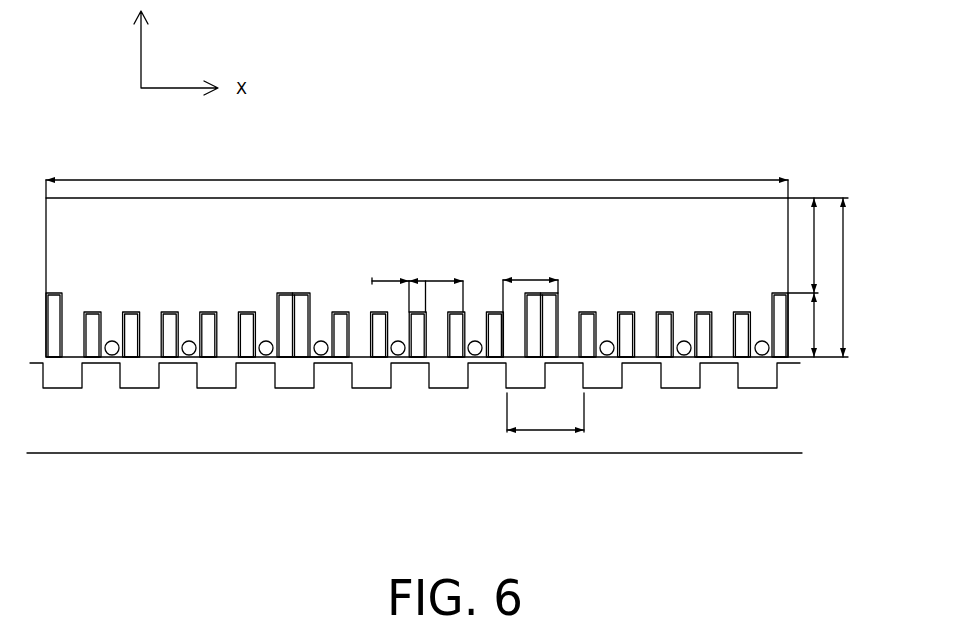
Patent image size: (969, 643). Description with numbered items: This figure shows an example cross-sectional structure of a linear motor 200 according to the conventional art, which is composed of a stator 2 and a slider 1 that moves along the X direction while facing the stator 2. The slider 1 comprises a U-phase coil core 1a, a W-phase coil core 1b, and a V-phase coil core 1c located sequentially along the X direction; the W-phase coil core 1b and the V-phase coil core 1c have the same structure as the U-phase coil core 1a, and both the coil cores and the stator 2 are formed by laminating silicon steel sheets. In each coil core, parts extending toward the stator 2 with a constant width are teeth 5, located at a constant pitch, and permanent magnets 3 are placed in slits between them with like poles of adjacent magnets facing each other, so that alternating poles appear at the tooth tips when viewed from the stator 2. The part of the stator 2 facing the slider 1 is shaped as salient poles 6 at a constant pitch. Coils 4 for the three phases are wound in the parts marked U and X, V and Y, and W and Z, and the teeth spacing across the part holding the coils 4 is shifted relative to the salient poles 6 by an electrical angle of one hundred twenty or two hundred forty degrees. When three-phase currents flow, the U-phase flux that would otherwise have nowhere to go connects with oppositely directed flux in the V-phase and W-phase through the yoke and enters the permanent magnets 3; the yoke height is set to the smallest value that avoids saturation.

The slider 1 is at (763, 196).
The U-phase coil core 1a is at (150, 213).
The W-phase coil core 1b is at (468, 213).
The V-phase coil core 1c is at (665, 213).
The stator 2 is at (363, 418).
The permanent magnet 3 is at (301, 300).
The coil 4 is at (53, 310).
The teeth 5 is at (357, 327).
The salient pole 6 is at (175, 380).
The linear motor 200 is at (824, 177).